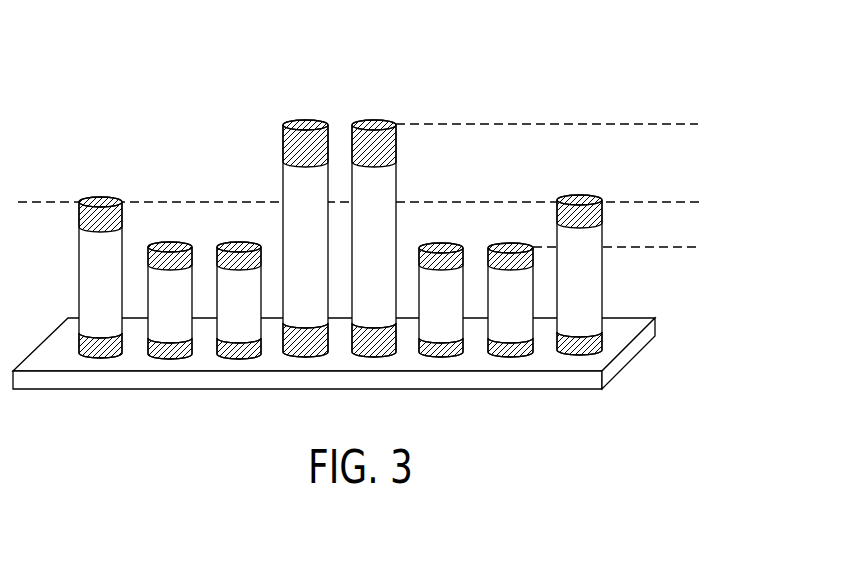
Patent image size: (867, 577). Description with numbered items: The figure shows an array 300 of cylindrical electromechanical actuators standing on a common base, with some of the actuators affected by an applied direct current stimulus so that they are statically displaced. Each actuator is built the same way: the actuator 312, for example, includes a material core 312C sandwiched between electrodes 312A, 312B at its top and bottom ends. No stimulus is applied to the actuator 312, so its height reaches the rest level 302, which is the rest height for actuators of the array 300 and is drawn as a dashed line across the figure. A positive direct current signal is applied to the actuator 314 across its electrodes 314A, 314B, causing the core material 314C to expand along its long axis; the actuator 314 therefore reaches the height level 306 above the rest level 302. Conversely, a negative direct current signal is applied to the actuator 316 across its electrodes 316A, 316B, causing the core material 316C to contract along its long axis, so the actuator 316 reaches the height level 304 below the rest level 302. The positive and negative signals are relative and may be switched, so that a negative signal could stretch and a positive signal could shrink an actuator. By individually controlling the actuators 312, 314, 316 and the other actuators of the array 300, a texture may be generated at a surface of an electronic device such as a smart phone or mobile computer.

The array 300 is at (143, 122).
The rest level 302 is at (670, 197).
The height level 304 is at (675, 247).
The height level 306 is at (670, 121).
The actuator 312 is at (621, 211).
The electrode 312A is at (593, 211).
The electrode 312B is at (593, 345).
The material core 312C is at (590, 263).
The actuator 314 is at (371, 233).
The electrode 314A is at (380, 140).
The electrode 314B is at (378, 347).
The core material 314C is at (378, 178).
The actuator 316 is at (482, 233).
The electrode 316A is at (508, 255).
The electrode 316B is at (508, 345).
The core material 316C is at (503, 283).